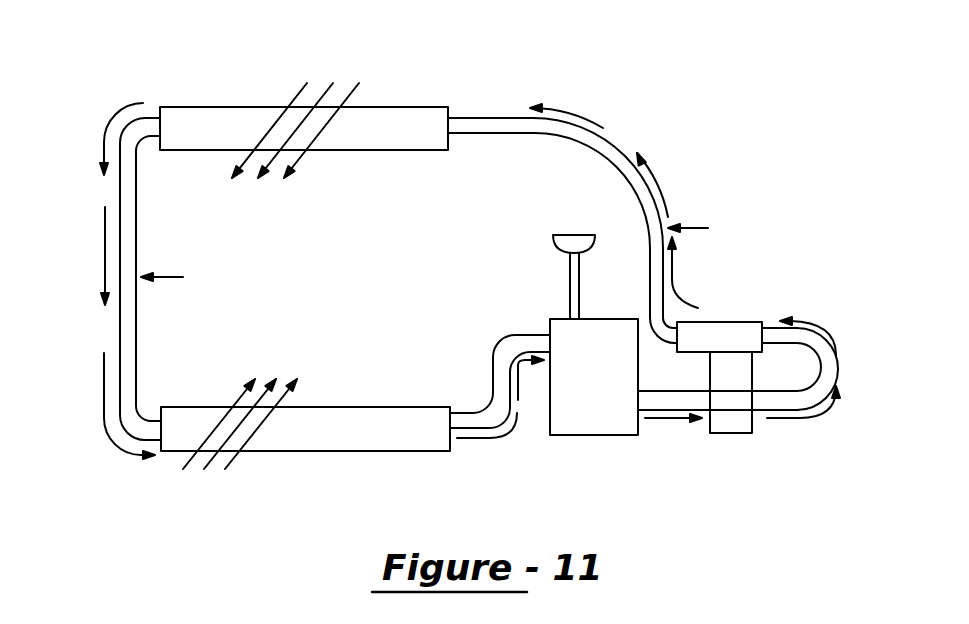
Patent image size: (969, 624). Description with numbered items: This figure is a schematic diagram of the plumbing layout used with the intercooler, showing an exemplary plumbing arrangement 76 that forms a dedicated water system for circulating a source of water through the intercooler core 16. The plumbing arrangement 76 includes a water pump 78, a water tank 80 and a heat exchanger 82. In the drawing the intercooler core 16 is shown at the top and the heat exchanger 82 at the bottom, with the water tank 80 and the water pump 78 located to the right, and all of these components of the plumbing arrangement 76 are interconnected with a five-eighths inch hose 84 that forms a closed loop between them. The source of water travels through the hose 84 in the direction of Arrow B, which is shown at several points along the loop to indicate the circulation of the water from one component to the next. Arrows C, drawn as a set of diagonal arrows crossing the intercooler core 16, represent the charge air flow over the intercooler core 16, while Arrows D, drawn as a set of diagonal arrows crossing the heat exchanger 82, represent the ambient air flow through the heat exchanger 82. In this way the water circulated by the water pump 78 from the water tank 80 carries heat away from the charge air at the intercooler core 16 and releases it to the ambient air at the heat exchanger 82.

The intercooler core 16 is at (350, 166).
The plumbing arrangement 76 is at (557, 80).
The water pump 78 is at (722, 323).
The water tank 80 is at (600, 436).
The heat exchanger 82 is at (315, 417).
The hose 84 is at (620, 147).
The Arrow B is at (105, 255).
The Arrows C is at (332, 123).
The Arrows D is at (220, 420).